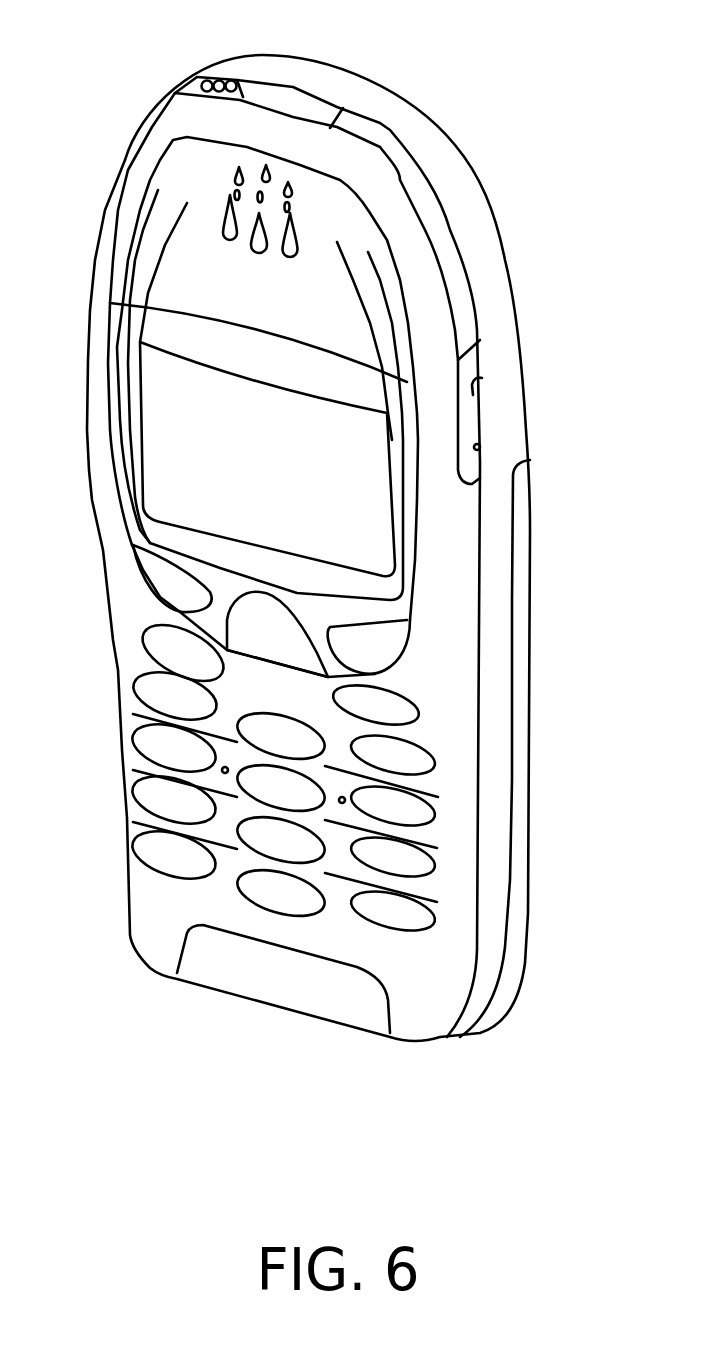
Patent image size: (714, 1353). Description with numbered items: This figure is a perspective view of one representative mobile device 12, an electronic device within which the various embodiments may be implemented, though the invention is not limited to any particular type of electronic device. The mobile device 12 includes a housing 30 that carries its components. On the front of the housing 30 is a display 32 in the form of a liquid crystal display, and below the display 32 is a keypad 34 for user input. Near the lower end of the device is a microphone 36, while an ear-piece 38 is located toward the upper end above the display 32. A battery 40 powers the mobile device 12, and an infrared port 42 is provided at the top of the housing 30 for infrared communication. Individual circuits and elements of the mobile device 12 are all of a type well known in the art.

The mobile device 12 is at (462, 62).
The housing 30 is at (490, 257).
The display 32 is at (363, 513).
The keypad 34 is at (390, 918).
The microphone 36 is at (210, 968).
The ear-piece 38 is at (248, 203).
The battery 40 is at (520, 896).
The infrared port 42 is at (290, 94).